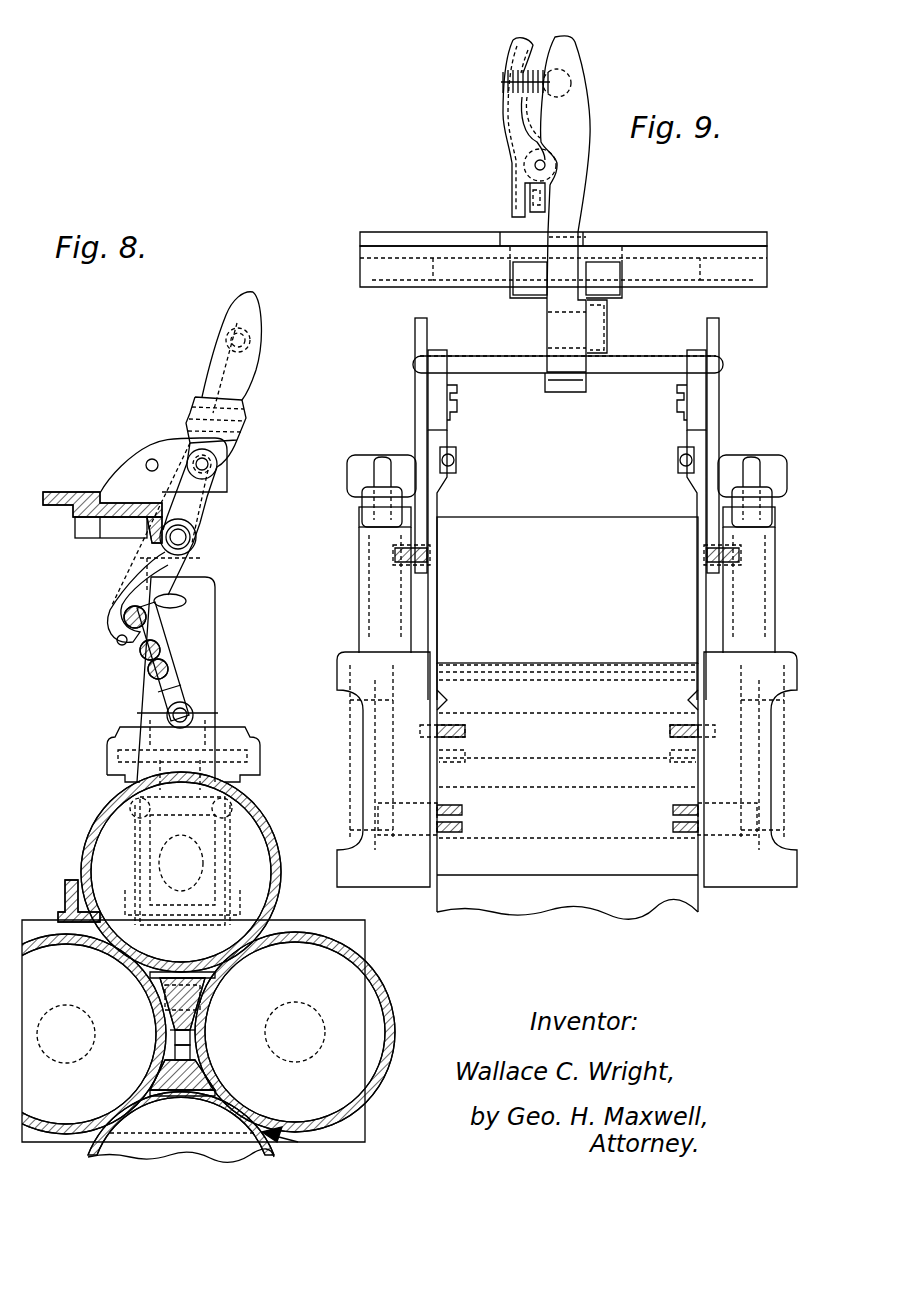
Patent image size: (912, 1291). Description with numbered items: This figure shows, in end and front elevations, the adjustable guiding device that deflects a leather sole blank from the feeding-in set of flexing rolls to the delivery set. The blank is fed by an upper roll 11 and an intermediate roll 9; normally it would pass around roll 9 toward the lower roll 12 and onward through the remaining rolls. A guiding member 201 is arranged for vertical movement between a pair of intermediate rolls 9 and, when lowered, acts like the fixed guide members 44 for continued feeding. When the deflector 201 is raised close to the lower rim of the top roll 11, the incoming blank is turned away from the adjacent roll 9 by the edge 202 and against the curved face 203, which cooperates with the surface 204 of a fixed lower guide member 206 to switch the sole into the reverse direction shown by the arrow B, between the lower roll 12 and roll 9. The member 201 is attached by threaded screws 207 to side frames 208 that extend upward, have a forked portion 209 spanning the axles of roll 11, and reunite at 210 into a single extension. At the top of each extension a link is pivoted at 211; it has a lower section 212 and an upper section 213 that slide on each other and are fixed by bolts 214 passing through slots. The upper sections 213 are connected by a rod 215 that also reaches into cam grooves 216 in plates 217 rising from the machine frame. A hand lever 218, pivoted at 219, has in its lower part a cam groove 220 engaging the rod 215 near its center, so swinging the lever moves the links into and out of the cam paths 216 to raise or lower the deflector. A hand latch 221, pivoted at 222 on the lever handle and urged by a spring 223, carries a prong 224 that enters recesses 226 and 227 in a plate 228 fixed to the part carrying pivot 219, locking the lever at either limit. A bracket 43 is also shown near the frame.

In FIG. 8, the intermediate roll 9 is at (50, 1121).
In FIG. 9, the intermediate roll 9 is at (611, 811).
In FIG. 8, the top roll 11 is at (272, 856).
In FIG. 9, the top roll 11 is at (567, 696).
In FIG. 8, the lower roll 12 is at (181, 1127).
In FIG. 9, the lower roll 12 is at (567, 897).
In FIG. 8, the bracket 43 is at (72, 880).
In FIG. 8, the guide member 44 is at (196, 1085).
In FIG. 8, the guiding member 201 is at (168, 1023).
In FIG. 9, the guiding member 201 is at (533, 731).
In FIG. 8, the edge 202 is at (212, 975).
In FIG. 8, the curved face 203 is at (195, 1012).
In FIG. 8, the surface 204 is at (192, 1055).
In FIG. 8, the fixed lower guide member 206 is at (160, 1072).
In FIG. 8, the threaded screws 207 is at (165, 998).
In FIG. 9, the threaded screws 207 is at (420, 733).
In FIG. 8, the side frames 208 is at (150, 975).
In FIG. 9, the side frames 208 is at (439, 702).
In FIG. 8, the forked portion 209 is at (237, 846).
In FIG. 9, the forked portion 209 is at (418, 583).
In FIG. 8, the single extension 210 is at (183, 757).
In FIG. 9, the single extension 210 is at (432, 505).
In FIG. 8, the pivot 211 is at (193, 716).
In FIG. 9, the pivot 211 is at (456, 460).
In FIG. 8, the lower link section 212 is at (182, 697).
In FIG. 9, the lower link section 212 is at (455, 412).
In FIG. 8, the upper link section 213 is at (147, 622).
In FIG. 8, the bolts or binding screws 214 is at (161, 650).
In FIG. 8, the rod 215 is at (137, 617).
In FIG. 9, the rod 215 is at (501, 367).
In FIG. 8, the cam grooves 216 is at (186, 602).
In FIG. 8, the plates 217 is at (210, 611).
In FIG. 9, the plates 217 is at (420, 386).
In FIG. 8, the lever 218 is at (300, 262).
In FIG. 9, the lever 218 is at (572, 174).
In FIG. 8, the pivot 219 is at (196, 538).
In FIG. 8, the cam groove 220 is at (128, 590).
In FIG. 9, the cam groove 220 is at (568, 363).
In FIG. 9, the hand latch 221 is at (505, 105).
In FIG. 8, the pivot 222 is at (246, 427).
In FIG. 9, the pivot 222 is at (535, 167).
In FIG. 8, the spring 223 is at (226, 340).
In FIG. 9, the spring 223 is at (546, 72).
In FIG. 8, the prong 224 is at (210, 464).
In FIG. 9, the prong 224 is at (530, 203).
In FIG. 8, the recess 226 is at (190, 443).
In FIG. 8, the recess 227 is at (148, 461).
In FIG. 8, the plate 228 is at (125, 477).
In FIG. 8, the arrow B is at (298, 1142).